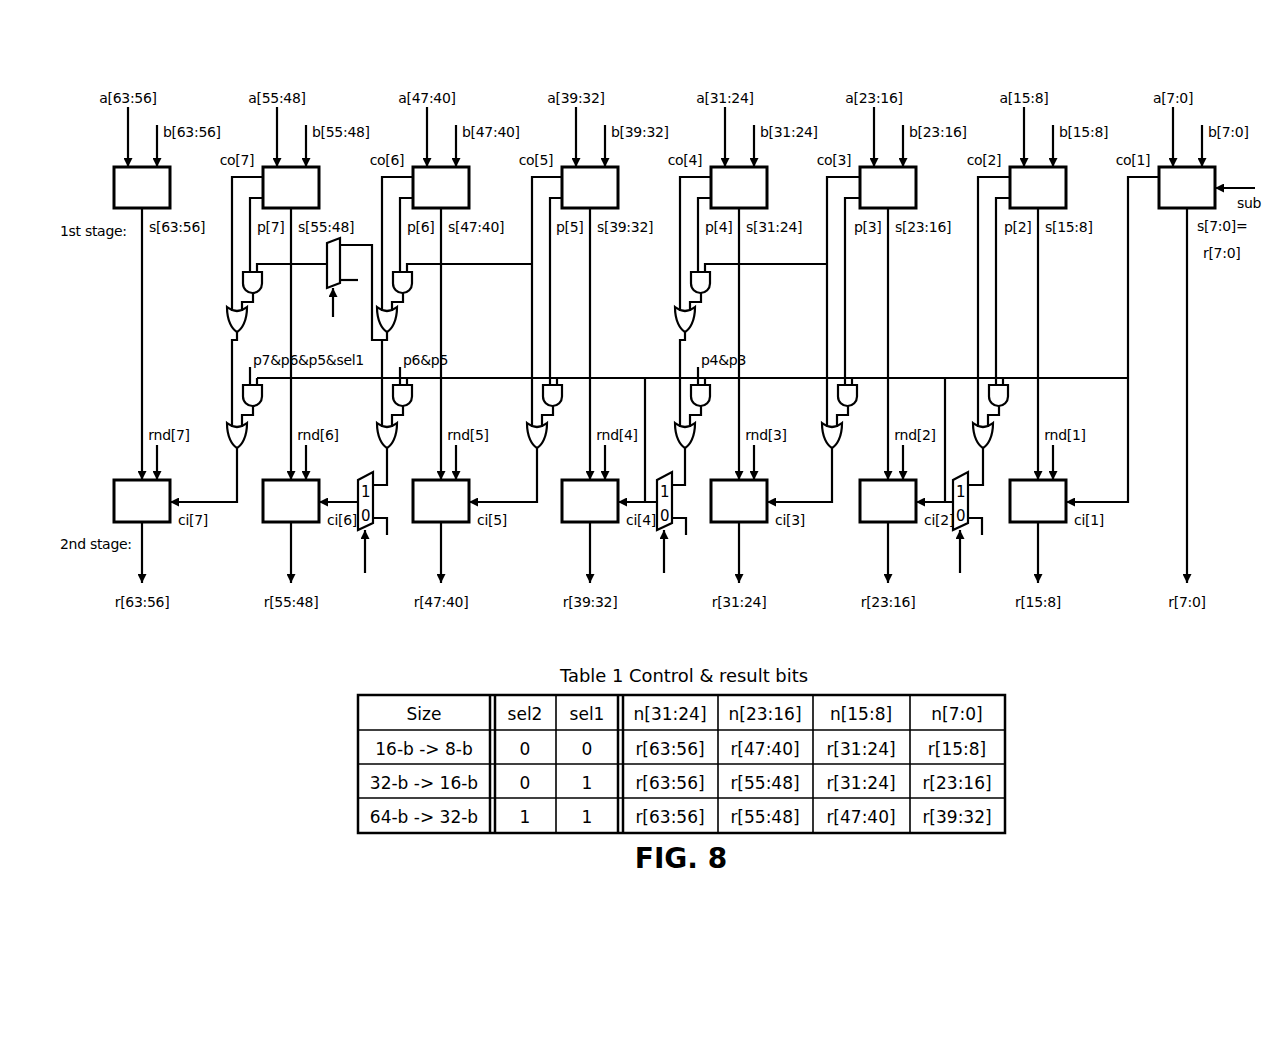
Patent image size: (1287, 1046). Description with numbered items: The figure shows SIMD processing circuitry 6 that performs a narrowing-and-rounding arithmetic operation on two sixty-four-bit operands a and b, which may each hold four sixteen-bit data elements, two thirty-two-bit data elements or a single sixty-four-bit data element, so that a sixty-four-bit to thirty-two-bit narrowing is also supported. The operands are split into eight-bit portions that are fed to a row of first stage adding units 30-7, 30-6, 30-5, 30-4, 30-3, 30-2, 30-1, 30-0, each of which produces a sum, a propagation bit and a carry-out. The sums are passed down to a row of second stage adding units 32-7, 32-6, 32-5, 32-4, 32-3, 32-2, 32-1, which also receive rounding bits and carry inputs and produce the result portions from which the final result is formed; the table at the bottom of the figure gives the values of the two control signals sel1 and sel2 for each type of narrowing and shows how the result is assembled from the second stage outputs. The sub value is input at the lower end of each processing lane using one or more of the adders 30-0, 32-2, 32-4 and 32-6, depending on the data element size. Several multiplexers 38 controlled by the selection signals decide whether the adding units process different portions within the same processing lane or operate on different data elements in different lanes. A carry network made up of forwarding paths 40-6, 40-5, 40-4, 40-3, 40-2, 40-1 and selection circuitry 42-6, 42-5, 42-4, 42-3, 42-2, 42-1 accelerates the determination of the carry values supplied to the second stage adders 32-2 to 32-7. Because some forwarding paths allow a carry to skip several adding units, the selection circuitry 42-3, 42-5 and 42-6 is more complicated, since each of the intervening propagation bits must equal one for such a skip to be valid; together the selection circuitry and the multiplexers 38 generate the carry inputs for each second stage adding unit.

The first stage adding unit 30-7 is at (150, 167).
The first stage adding unit 30-6 is at (299, 167).
The first stage adding unit 30-5 is at (449, 167).
The first stage adding unit 30-4 is at (598, 167).
The first stage adding unit 30-3 is at (747, 167).
The first stage adding unit 30-2 is at (896, 167).
The first stage adding unit 30-1 is at (1046, 167).
The first stage adding unit 30-0 is at (1195, 167).
The second stage adding unit 32-7 is at (150, 522).
The second stage adding unit 32-6 is at (299, 522).
The second stage adding unit 32-5 is at (449, 522).
The second stage adding unit 32-4 is at (598, 522).
The second stage adding unit 32-3 is at (747, 522).
The second stage adding unit 32-2 is at (896, 522).
The second stage adding unit 32-1 is at (1046, 522).
The multiplexer 38 is at (340, 284).
The forwarding path 40-6 is at (305, 264).
The forwarding path 40-5 is at (484, 264).
The forwarding path 40-4 is at (600, 378).
The forwarding path 40-3 is at (773, 264).
The forwarding path 40-2 is at (910, 378).
The forwarding path 40-1 is at (1062, 378).
The selection circuitry 42-6 is at (222, 272).
The selection circuitry 42-5 is at (450, 272).
The selection circuitry 42-4 is at (563, 448).
The selection circuitry 42-3 is at (675, 272).
The selection circuitry 42-2 is at (862, 448).
The selection circuitry 42-1 is at (1010, 448).
The SIMD processing circuitry 6 is at (1203, 527).